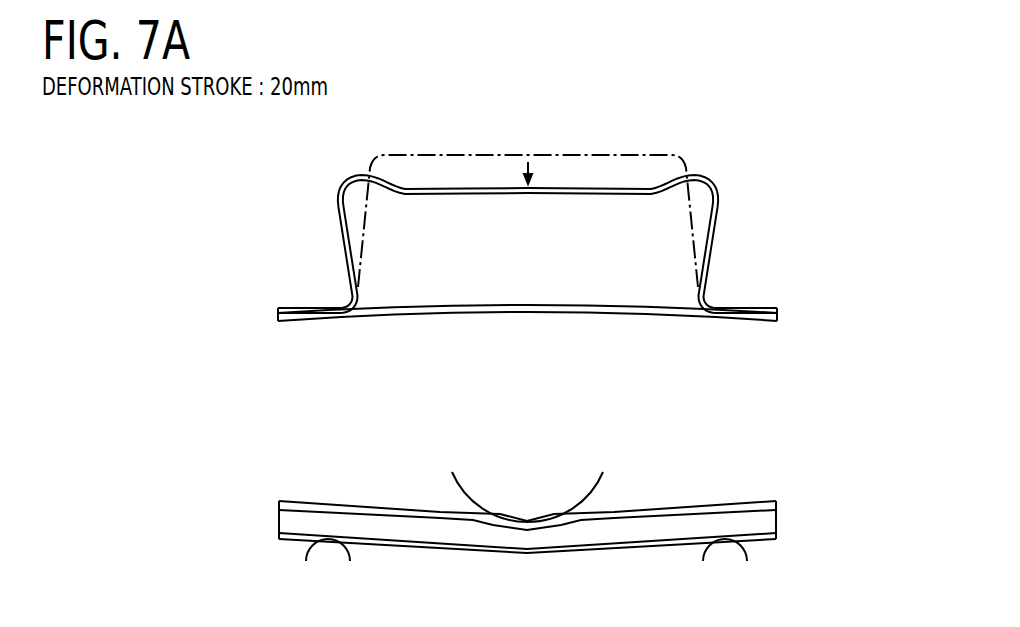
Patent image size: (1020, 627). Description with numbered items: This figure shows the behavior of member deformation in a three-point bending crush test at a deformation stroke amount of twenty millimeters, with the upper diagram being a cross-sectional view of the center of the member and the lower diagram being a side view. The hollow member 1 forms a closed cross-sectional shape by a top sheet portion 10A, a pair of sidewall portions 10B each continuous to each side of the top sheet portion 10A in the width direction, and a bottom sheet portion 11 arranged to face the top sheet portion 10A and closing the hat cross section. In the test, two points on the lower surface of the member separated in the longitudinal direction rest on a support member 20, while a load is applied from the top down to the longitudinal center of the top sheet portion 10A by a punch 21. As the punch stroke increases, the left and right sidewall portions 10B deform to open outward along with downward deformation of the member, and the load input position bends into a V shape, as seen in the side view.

The hollow member 1 is at (722, 492).
The top sheet portion 10A is at (582, 188).
The sidewall portions 10B is at (361, 233).
The bottom sheet portion 11 is at (527, 312).
The support member 20 is at (308, 548).
The indenter / impactor 21 is at (604, 484).